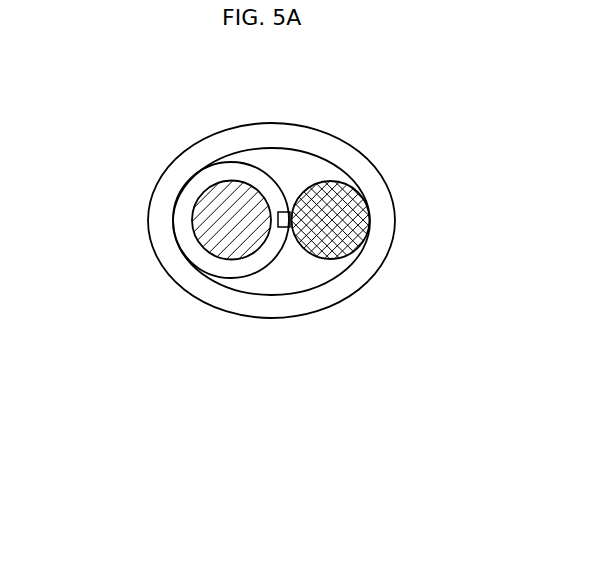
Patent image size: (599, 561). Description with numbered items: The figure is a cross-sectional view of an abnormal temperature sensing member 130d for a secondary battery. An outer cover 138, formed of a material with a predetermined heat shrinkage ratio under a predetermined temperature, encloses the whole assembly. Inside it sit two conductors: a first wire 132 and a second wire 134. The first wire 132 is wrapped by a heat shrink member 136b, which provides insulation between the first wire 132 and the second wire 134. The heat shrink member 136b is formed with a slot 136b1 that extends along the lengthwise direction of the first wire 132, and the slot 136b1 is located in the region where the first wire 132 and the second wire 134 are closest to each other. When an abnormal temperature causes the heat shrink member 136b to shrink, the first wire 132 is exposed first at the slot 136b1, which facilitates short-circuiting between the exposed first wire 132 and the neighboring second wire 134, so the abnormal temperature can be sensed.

The abnormal temperature sensing member 130d is at (130, 75).
The outer cover 138 is at (370, 168).
The heat shrink member 136b is at (175, 233).
The slot 136b1 is at (283, 238).
The first wire 132 is at (202, 200).
The second wire 134 is at (365, 238).